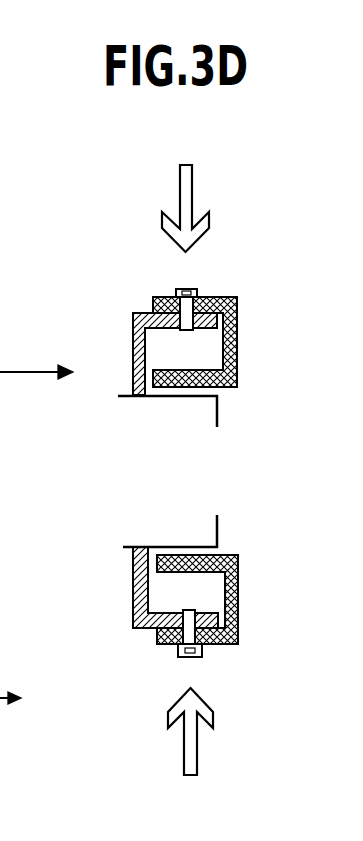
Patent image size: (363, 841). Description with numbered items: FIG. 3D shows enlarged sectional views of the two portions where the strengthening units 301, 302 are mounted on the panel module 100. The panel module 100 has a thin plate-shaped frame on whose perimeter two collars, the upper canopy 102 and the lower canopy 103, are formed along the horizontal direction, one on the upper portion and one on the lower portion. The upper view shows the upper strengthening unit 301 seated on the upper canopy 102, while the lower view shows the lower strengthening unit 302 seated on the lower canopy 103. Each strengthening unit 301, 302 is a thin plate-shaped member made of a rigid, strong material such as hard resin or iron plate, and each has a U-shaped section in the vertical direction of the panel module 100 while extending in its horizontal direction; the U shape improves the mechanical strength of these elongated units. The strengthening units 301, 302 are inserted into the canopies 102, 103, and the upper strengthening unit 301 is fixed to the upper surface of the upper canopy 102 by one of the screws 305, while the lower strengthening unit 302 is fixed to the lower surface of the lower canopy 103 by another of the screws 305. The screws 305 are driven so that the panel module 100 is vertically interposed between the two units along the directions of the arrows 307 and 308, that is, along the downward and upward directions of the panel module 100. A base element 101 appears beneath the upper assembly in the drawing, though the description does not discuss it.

The panel module 100 is at (200, 528).
The base plate 101 is at (202, 407).
The upper canopy 102 is at (135, 344).
The lower canopy 103 is at (153, 625).
The upper strengthening unit 301 is at (238, 320).
The lower strengthening unit 302 is at (238, 623).
The fixing screw 305 is at (178, 290).
The arrow 307 is at (193, 202).
The arrow 308 is at (183, 747).